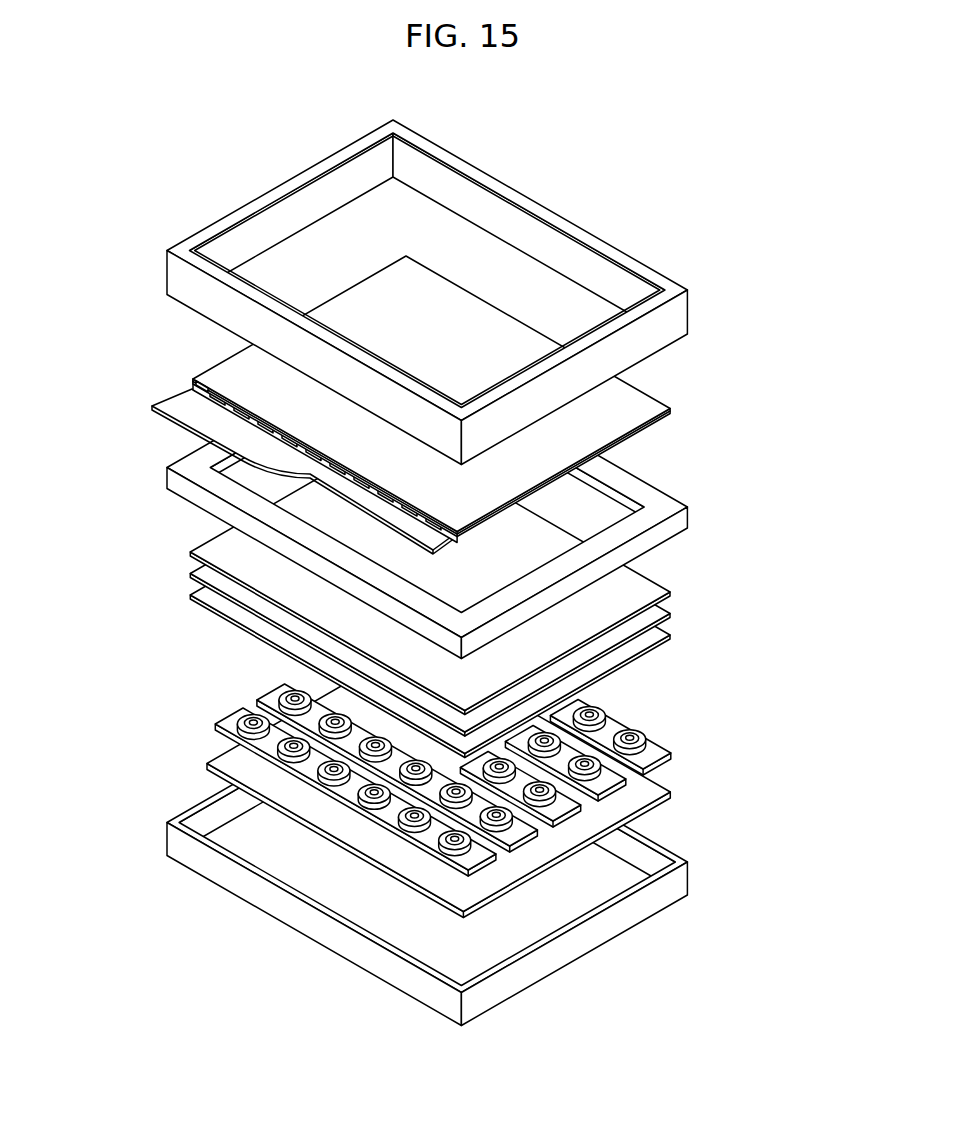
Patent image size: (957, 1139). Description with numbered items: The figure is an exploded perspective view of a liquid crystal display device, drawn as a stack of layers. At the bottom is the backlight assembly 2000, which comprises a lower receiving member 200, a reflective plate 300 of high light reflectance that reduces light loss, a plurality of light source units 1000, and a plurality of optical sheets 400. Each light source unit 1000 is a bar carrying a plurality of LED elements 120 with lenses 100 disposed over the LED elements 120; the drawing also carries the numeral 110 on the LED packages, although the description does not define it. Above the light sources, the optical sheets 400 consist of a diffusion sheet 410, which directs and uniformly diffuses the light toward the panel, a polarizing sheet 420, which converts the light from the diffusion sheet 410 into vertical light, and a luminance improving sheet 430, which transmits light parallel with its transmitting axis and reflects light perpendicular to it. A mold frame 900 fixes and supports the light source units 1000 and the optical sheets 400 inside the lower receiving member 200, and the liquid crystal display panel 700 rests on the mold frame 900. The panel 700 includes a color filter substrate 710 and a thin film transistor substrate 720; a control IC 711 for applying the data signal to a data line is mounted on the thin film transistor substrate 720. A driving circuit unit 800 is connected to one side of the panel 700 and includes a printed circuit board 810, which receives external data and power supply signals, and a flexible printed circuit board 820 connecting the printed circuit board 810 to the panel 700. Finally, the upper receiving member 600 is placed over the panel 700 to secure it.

The lens 100 is at (310, 787).
The light emitting diode 110 is at (247, 713).
The LED element 120 is at (222, 726).
The light source unit 1000 is at (366, 778).
The lower receiving member 200 is at (689, 876).
The reflective plate 300 is at (671, 792).
The optical sheets 400 is at (517, 596).
The diffusion sheet 410 is at (671, 635).
The polarizing sheet 420 is at (671, 613).
The luminance improving sheet 430 is at (671, 592).
The backlight assembly 2000 is at (488, 730).
The upper receiving member 600 is at (688, 320).
The liquid crystal display panel 700 is at (512, 396).
The color filter substrate 710 is at (670, 406).
The control IC 711 is at (193, 378).
The thin film transistor substrate 720 is at (671, 412).
The driving circuit unit 800 is at (233, 466).
The printed circuit board 810 is at (176, 406).
The flexible printed circuit board 820 is at (196, 384).
The mold frame 900 is at (688, 516).